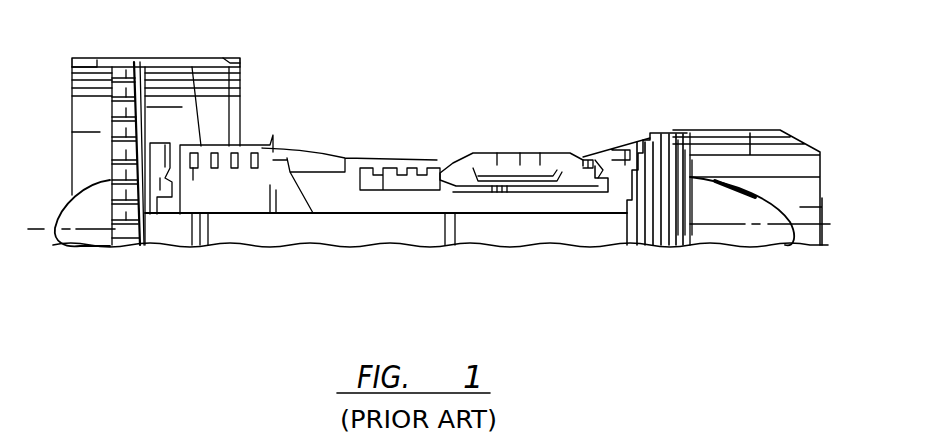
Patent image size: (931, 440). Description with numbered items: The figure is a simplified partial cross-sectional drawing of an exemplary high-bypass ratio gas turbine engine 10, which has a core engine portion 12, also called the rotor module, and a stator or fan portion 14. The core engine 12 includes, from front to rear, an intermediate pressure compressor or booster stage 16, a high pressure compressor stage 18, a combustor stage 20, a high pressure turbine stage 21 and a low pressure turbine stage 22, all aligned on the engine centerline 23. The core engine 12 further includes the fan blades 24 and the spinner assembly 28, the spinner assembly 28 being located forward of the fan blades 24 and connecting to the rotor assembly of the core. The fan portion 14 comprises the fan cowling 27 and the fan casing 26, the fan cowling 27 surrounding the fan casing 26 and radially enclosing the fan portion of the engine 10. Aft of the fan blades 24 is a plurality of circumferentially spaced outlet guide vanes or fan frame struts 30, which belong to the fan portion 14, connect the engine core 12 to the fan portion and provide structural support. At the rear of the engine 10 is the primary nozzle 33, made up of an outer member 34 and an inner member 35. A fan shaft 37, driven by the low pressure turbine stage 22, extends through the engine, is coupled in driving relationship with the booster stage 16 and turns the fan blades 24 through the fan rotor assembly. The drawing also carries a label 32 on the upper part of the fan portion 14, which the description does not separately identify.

The gas turbine engine 10 is at (685, 74).
The core engine portion 12 is at (147, 272).
The fan portion 14 is at (77, 48).
The booster stage 16 is at (274, 141).
The high pressure compressor stage 18 is at (424, 149).
The combustor stage 20 is at (491, 148).
The high pressure turbine stage 21 is at (616, 150).
The low pressure turbine stage 22 is at (645, 141).
The engine centerline 23 is at (38, 231).
The fan blades 24 is at (118, 125).
The fan casing 26 is at (72, 72).
The fan cowling 27 is at (97, 57).
The spinner assembly 28 is at (73, 201).
The outlet guide vanes 30 is at (215, 128).
The top cap 32 is at (242, 55).
The primary nozzle 33 is at (748, 152).
The outer member 34 is at (678, 139).
The inner member 35 is at (789, 227).
The fan shaft 37 is at (232, 232).